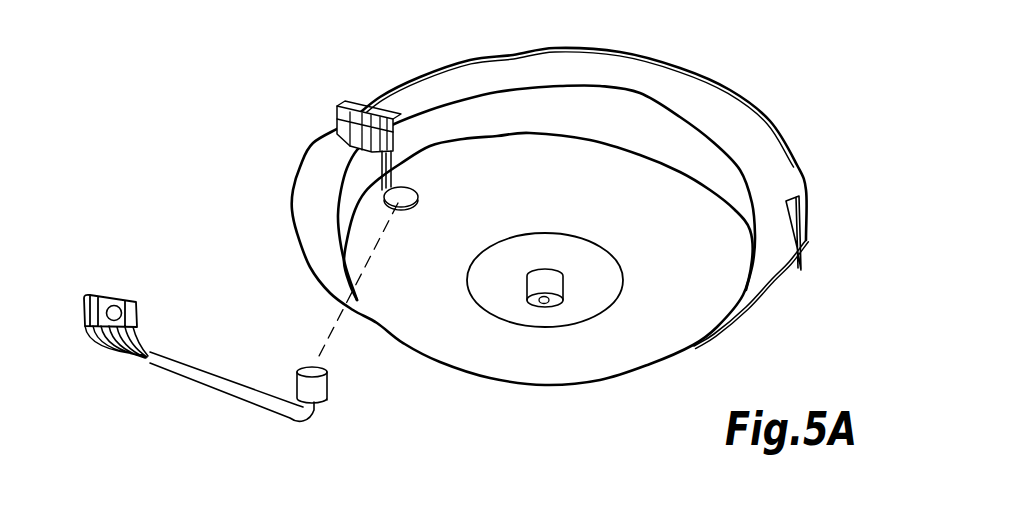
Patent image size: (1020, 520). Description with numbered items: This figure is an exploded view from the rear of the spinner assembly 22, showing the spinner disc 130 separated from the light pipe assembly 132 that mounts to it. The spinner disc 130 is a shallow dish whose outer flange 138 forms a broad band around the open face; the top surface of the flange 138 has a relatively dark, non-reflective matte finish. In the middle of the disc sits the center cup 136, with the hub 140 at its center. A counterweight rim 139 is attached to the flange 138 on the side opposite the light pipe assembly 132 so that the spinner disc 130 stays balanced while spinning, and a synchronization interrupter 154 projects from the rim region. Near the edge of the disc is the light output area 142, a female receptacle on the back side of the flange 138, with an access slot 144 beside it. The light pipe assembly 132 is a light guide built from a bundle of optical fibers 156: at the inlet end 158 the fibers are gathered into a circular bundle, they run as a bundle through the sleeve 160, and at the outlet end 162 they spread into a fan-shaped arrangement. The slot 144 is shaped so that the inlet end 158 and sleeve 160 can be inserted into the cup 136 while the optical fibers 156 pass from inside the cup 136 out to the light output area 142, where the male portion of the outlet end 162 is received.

The spinner assembly 22 is at (193, 153).
The spinner disc 130 is at (603, 48).
The light pipe assembly 132 is at (277, 419).
The center cup 136 is at (676, 330).
The outer flange 138 is at (658, 92).
The counterweight rim 139 is at (767, 292).
The hub 140 is at (548, 298).
The light output area 142 is at (343, 113).
The access slot 144 is at (382, 168).
The synchronization interrupter 154 is at (796, 252).
The optical fibers 156 is at (112, 352).
The inlet end 158 is at (320, 388).
The sleeve 160 is at (204, 377).
The outlet end 162 is at (96, 298).